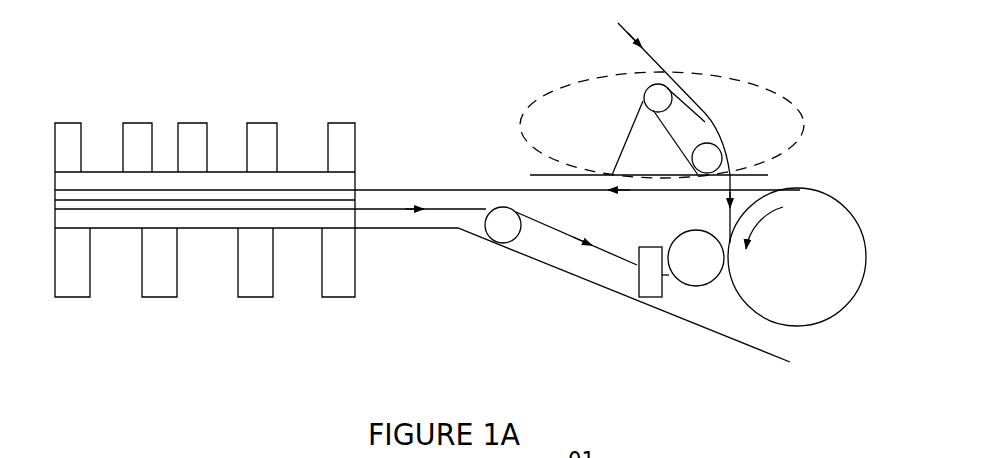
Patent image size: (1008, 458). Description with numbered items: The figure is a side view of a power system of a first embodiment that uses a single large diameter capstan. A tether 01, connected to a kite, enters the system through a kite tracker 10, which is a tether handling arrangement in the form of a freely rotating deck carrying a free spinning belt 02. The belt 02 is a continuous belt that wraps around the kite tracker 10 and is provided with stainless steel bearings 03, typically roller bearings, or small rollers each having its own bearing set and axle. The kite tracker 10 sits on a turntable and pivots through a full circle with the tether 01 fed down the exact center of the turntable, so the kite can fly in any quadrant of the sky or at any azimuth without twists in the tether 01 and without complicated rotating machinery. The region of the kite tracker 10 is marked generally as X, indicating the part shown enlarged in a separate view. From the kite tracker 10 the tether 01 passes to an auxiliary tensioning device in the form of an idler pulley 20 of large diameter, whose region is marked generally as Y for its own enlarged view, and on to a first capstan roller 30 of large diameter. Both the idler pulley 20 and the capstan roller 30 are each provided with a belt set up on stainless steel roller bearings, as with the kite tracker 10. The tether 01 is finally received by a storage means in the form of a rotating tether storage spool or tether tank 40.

The capstan roller 30 is at (123, 103).
The kite tracker 10 is at (627, 121).
The tether 01 is at (657, 50).
The belt 02 is at (679, 80).
The bearings 03 is at (706, 116).
The idler pulley 20 is at (830, 221).
The tether tank 40 is at (706, 287).
The kite tracker region X is at (662, 124).
The idler pulley region Y is at (865, 214).